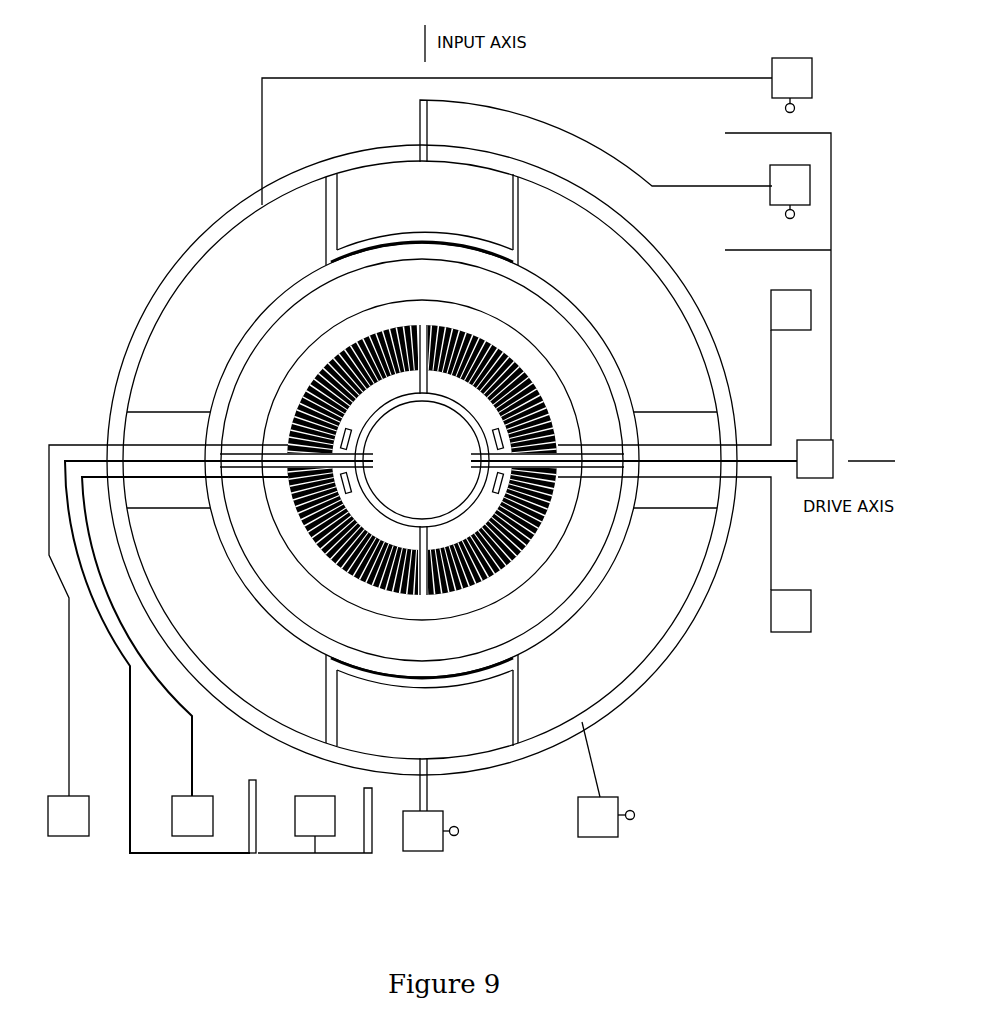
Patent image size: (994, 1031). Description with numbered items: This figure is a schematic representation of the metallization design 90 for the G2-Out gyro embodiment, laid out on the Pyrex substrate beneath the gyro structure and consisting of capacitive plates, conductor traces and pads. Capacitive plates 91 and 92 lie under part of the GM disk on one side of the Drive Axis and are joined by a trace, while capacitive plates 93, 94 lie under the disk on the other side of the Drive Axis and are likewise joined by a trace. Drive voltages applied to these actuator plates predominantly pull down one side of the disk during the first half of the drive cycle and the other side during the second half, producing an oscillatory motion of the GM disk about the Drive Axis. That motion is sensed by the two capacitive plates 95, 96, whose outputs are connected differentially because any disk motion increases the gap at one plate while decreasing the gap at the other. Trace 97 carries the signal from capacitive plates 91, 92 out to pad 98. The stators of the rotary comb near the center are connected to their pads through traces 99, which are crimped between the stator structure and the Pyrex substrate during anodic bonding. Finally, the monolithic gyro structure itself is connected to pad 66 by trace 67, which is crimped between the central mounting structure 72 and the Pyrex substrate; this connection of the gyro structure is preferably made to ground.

The metallization design 90 is at (110, 283).
The capacitive plate 91 is at (617, 294).
The capacitive plate 92 is at (226, 294).
The capacitive plate 93 is at (617, 672).
The capacitive plate 94 is at (226, 625).
The capacitive plate 95 is at (554, 175).
The capacitive plate 96 is at (425, 760).
The trace 97 is at (257, 118).
The pad 98 is at (772, 68).
The traces 99 is at (352, 486).
The mounting structure 72 is at (422, 460).
The pad 66 is at (822, 440).
The trace 67 is at (781, 440).